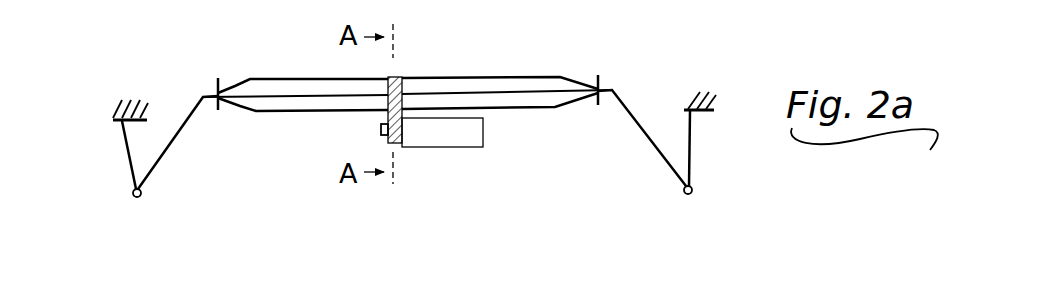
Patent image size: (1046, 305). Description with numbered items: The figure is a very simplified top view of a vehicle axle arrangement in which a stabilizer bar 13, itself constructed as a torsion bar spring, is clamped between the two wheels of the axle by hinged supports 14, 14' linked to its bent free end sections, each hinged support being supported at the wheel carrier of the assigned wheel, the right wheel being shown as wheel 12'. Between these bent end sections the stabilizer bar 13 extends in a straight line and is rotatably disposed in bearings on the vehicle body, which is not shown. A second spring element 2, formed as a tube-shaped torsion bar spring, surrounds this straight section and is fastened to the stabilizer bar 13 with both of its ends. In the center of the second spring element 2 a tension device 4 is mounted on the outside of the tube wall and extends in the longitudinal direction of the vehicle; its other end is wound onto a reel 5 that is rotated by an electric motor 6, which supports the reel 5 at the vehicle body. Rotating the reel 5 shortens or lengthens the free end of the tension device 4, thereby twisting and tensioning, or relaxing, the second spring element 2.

The second spring element 2 is at (536, 111).
The tension device 4 is at (404, 79).
The reel 5 is at (381, 129).
The electric motor 6 is at (443, 148).
The right vehicle wheel 12' is at (708, 86).
The stabilizer bar 13 is at (280, 96).
The hinged support 14 is at (132, 143).
The hinged support 14' is at (645, 107).